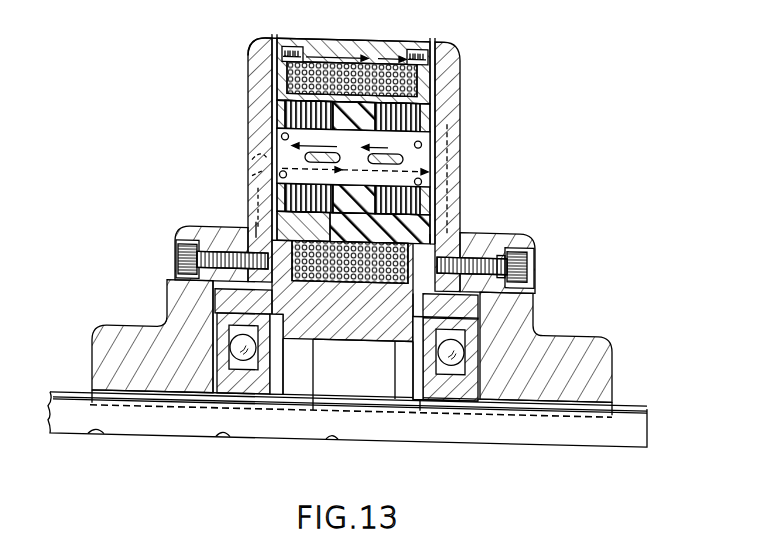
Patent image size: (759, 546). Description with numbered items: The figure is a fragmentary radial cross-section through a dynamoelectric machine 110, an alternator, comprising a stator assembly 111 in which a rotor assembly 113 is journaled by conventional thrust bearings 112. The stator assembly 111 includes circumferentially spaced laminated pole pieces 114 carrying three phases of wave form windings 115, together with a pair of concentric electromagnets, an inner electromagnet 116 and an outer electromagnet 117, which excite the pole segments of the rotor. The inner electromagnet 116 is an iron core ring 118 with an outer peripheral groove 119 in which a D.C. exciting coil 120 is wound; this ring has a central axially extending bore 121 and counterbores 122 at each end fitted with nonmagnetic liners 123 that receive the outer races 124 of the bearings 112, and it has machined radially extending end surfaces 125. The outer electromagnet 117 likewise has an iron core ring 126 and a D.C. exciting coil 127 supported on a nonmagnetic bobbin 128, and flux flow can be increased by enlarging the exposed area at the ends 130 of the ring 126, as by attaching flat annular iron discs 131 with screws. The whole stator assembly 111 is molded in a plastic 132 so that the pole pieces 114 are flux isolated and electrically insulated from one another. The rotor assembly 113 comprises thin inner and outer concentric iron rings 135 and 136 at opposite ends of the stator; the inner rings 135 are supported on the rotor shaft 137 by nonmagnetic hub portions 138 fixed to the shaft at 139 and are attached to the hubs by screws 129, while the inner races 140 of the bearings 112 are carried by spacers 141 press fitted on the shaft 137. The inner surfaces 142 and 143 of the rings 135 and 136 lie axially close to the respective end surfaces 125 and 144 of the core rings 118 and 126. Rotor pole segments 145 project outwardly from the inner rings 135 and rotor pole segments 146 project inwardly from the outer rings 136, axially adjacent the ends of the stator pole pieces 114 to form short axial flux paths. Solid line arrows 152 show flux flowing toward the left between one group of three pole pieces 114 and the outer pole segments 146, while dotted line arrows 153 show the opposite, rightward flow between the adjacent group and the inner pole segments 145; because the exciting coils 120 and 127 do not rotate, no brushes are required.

The dynamoelectric machine 110 is at (333, 146).
The stator assembly 111 is at (379, 38).
The thrust bearings 112 is at (289, 356).
The rotor assembly 113 is at (171, 246).
The laminated pole pieces 114 is at (431, 157).
The wave form windings 115 is at (440, 200).
The inner electromagnet 116 is at (323, 345).
The outer electromagnet 117 is at (311, 39).
The iron core ring 118 is at (219, 307).
The outer peripheral groove 119 is at (413, 370).
The D.C. exciting coil 120 is at (343, 268).
The central bore 121 is at (317, 415).
The counterbores 122 is at (180, 306).
The nonmagnetic liners 123 is at (220, 322).
The outer races 124 is at (235, 399).
The end surfaces 125 is at (442, 234).
The iron core ring 126 is at (357, 109).
The D.C. exciting coil 127 is at (431, 75).
The bobbin 128 is at (437, 98).
The screws 129 is at (531, 239).
The ends 130 is at (431, 57).
The annular iron discs 131 is at (465, 54).
The plastic 132 is at (256, 224).
The inner rings 135 is at (488, 258).
The outer rings 136 is at (256, 64).
The rotor shaft 137 is at (569, 431).
The hub portions 138 is at (103, 360).
The keyed location 139 is at (598, 372).
The inner races 140 is at (462, 399).
The spacers 141 is at (437, 399).
The inner surfaces 142 is at (252, 240).
The inner surfaces 143 is at (431, 68).
The end surfaces 144 is at (264, 44).
The rotor pole segments 145 is at (246, 174).
The rotor pole segments 146 is at (252, 150).
The solid line arrows 152 is at (447, 123).
The dotted line arrows 153 is at (446, 172).